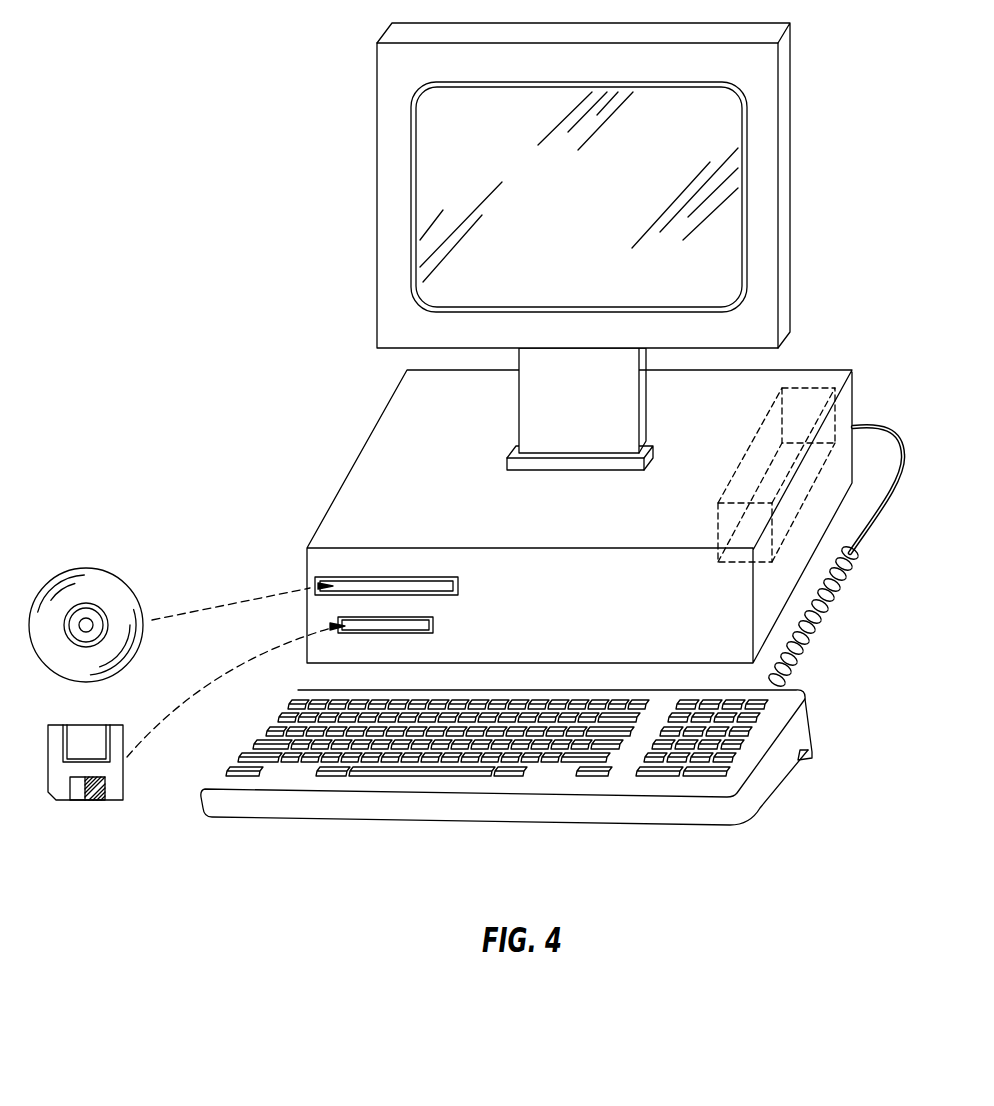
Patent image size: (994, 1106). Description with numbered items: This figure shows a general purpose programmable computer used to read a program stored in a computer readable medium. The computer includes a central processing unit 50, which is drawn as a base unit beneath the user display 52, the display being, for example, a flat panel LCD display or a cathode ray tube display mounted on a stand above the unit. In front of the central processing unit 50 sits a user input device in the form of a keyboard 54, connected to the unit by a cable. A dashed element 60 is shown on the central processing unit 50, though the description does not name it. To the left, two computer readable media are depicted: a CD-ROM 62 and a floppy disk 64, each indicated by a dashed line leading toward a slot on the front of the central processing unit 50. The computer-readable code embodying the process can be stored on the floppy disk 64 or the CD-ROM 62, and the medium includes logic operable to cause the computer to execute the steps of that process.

The central processing unit 50 is at (355, 465).
The user display 52 is at (787, 212).
The keyboard 54 is at (453, 823).
The card reader slot 60 is at (718, 510).
The CD-ROM 62 is at (87, 563).
The floppy disk 64 is at (92, 802).